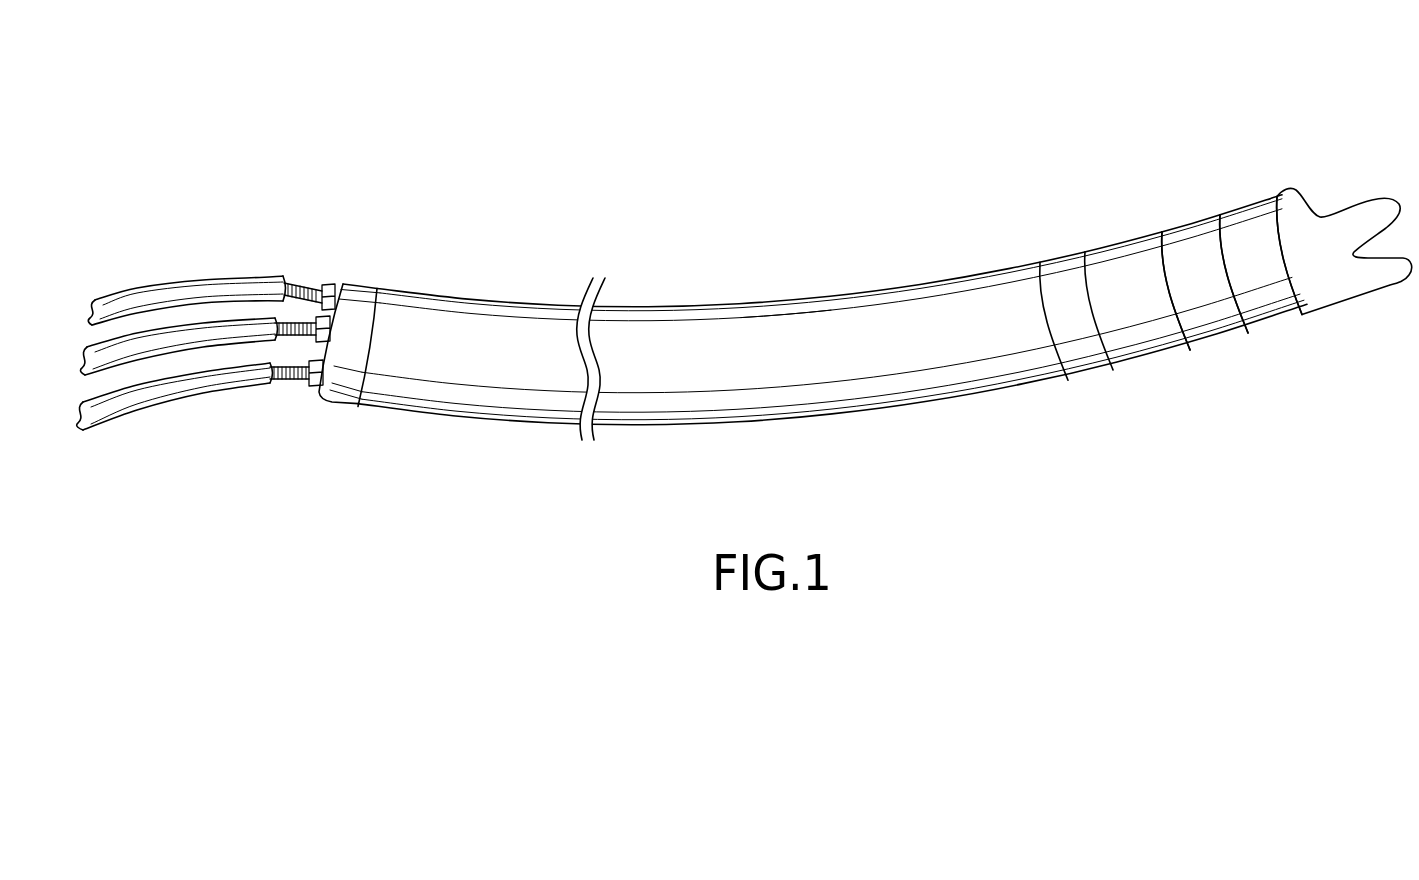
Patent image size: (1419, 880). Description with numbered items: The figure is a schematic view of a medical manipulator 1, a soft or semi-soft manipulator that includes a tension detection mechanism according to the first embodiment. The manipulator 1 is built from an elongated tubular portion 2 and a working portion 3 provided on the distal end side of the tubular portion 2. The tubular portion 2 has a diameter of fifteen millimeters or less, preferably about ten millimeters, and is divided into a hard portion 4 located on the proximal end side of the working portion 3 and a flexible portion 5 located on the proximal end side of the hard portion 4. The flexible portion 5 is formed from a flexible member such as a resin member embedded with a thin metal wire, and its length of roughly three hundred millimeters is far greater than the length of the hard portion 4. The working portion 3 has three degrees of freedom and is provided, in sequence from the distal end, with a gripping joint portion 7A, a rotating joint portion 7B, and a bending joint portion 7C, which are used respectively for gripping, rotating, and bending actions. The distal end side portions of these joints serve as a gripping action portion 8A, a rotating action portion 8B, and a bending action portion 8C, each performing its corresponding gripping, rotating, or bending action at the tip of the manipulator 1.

The medical manipulator 1 is at (962, 97).
The tubular portion 2 is at (1100, 192).
The working portion 3 is at (1298, 243).
The hard portion 4 is at (1103, 260).
The flexible portion 5 is at (782, 322).
The gripping joint portion 7A is at (1277, 223).
The rotating joint portion 7B is at (1218, 230).
The bending joint portion 7C is at (1163, 247).
The gripping action portion 8A is at (1408, 286).
The rotating action portion 8B is at (1265, 372).
The bending action portion 8C is at (1222, 430).